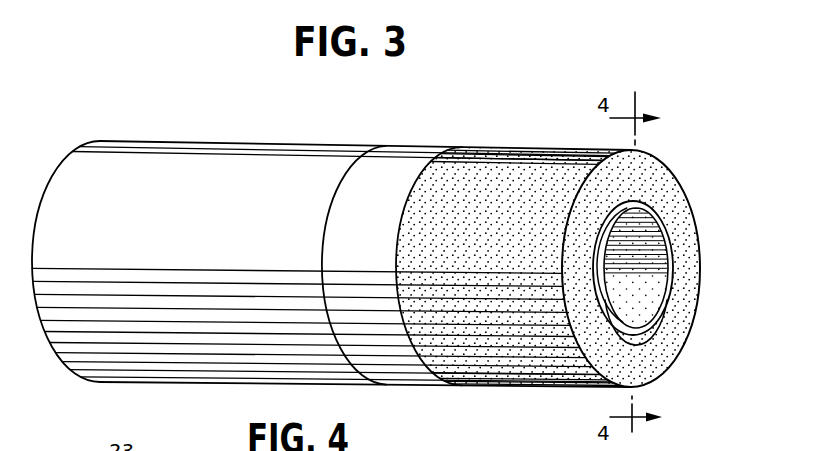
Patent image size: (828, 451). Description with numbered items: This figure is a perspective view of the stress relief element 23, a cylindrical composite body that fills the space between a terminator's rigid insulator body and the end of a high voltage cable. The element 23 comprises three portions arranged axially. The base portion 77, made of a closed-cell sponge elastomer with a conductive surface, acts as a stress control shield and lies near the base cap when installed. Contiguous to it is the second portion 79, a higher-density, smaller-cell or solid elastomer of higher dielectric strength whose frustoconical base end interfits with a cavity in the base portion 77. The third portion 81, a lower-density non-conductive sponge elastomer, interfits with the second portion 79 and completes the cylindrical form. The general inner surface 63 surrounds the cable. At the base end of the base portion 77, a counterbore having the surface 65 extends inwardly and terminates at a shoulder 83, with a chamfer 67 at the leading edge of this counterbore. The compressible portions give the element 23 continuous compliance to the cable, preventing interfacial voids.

The stress relief element 23 is at (180, 108).
The third portion 81 is at (228, 152).
The second portion 79 is at (418, 152).
The base portion 77 is at (515, 160).
The inner surface 63 is at (617, 243).
The counterbore surface 65 is at (645, 292).
The chamfer 67 is at (668, 252).
The shoulder 83 is at (612, 313).